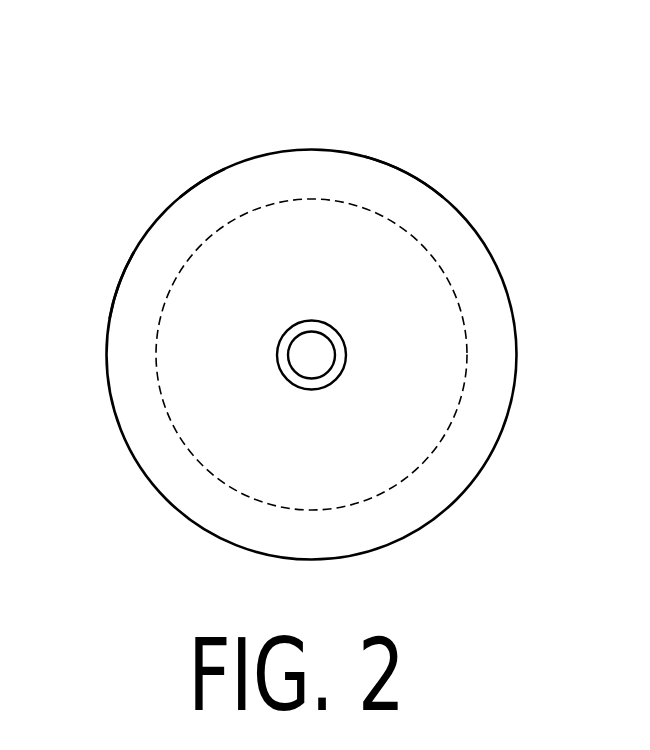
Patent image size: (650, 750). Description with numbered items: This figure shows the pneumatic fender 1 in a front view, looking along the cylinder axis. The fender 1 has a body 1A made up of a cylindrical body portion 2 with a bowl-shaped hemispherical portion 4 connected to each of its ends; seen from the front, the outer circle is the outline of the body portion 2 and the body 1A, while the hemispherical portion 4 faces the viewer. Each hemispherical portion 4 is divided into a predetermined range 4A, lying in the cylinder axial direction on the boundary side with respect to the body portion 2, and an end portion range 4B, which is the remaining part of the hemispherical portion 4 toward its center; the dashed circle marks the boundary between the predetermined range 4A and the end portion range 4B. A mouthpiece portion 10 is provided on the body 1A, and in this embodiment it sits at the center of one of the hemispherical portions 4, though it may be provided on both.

The pneumatic fender 1 is at (483, 158).
The body 1A is at (386, 176).
The body portion 2 is at (284, 149).
The hemispherical portion 4 is at (163, 125).
The predetermined range 4A is at (188, 207).
The end portion range 4B is at (178, 292).
The mouthpiece portion 10 is at (328, 377).